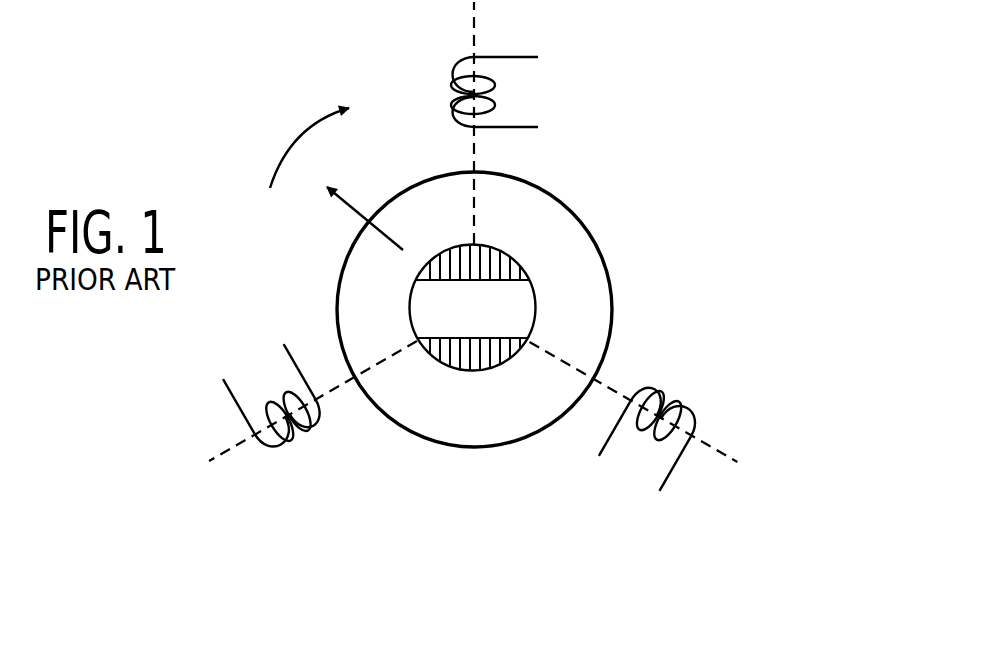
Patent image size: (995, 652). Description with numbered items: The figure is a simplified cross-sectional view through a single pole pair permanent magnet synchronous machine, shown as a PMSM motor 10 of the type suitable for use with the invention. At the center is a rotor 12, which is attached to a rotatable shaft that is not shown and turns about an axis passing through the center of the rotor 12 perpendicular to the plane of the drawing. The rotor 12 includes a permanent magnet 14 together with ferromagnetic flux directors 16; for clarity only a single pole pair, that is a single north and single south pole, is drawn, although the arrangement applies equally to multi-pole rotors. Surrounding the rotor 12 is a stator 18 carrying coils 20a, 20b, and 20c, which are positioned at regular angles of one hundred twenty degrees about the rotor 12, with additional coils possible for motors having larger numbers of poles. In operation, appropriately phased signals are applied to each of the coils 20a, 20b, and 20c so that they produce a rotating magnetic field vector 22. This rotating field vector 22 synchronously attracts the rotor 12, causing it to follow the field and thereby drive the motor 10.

The PMSM motor 10 is at (675, 214).
The rotor 12 is at (523, 267).
The permanent magnet 14 is at (498, 337).
The ferromagnetic flux directors 16 is at (438, 350).
The stator 18 is at (612, 308).
The coil 20a is at (690, 403).
The coil 20b is at (468, 60).
The coil 20c is at (230, 394).
The rotating magnetic field vector 22 is at (357, 205).